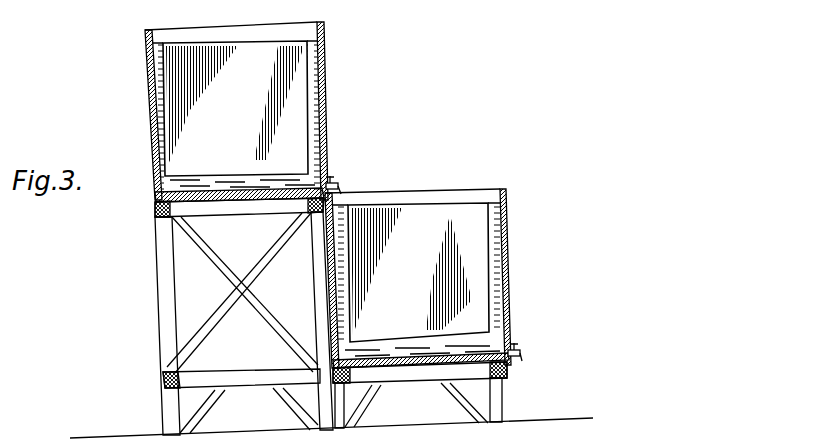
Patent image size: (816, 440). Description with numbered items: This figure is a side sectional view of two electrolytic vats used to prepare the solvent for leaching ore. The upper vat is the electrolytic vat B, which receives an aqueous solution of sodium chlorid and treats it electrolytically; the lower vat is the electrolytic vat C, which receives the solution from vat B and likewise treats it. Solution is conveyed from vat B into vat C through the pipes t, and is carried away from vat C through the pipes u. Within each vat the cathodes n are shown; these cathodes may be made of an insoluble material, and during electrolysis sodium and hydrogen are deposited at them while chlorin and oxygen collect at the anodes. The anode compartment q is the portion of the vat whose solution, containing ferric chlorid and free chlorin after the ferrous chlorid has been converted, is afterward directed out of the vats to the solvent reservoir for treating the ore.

The electrolytic vat B is at (332, 91).
The electrolytic vat C is at (410, 190).
The cathodes n is at (326, 191).
The anode compartment q is at (152, 191).
The pipes t is at (339, 188).
The pipes u is at (523, 356).